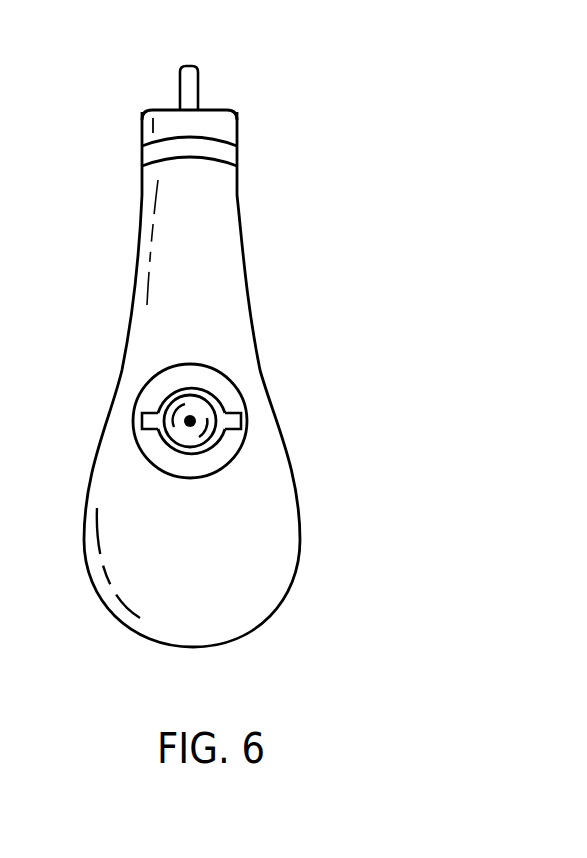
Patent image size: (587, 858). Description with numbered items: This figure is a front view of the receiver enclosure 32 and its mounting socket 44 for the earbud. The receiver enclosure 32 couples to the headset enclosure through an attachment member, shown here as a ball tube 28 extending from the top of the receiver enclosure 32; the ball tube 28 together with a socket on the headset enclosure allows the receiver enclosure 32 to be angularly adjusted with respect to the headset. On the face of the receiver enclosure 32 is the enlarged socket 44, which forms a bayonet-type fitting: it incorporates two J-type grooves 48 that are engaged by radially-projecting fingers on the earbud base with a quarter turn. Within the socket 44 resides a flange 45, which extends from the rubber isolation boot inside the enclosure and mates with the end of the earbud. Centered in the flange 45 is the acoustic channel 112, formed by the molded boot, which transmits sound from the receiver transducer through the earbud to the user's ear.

The ball tube 28 is at (198, 78).
The receiver enclosure 32 is at (292, 465).
The socket 44 is at (162, 452).
The flange 45 is at (197, 440).
The J-type grooves 48 is at (133, 412).
The acoustic channel 112 is at (193, 415).